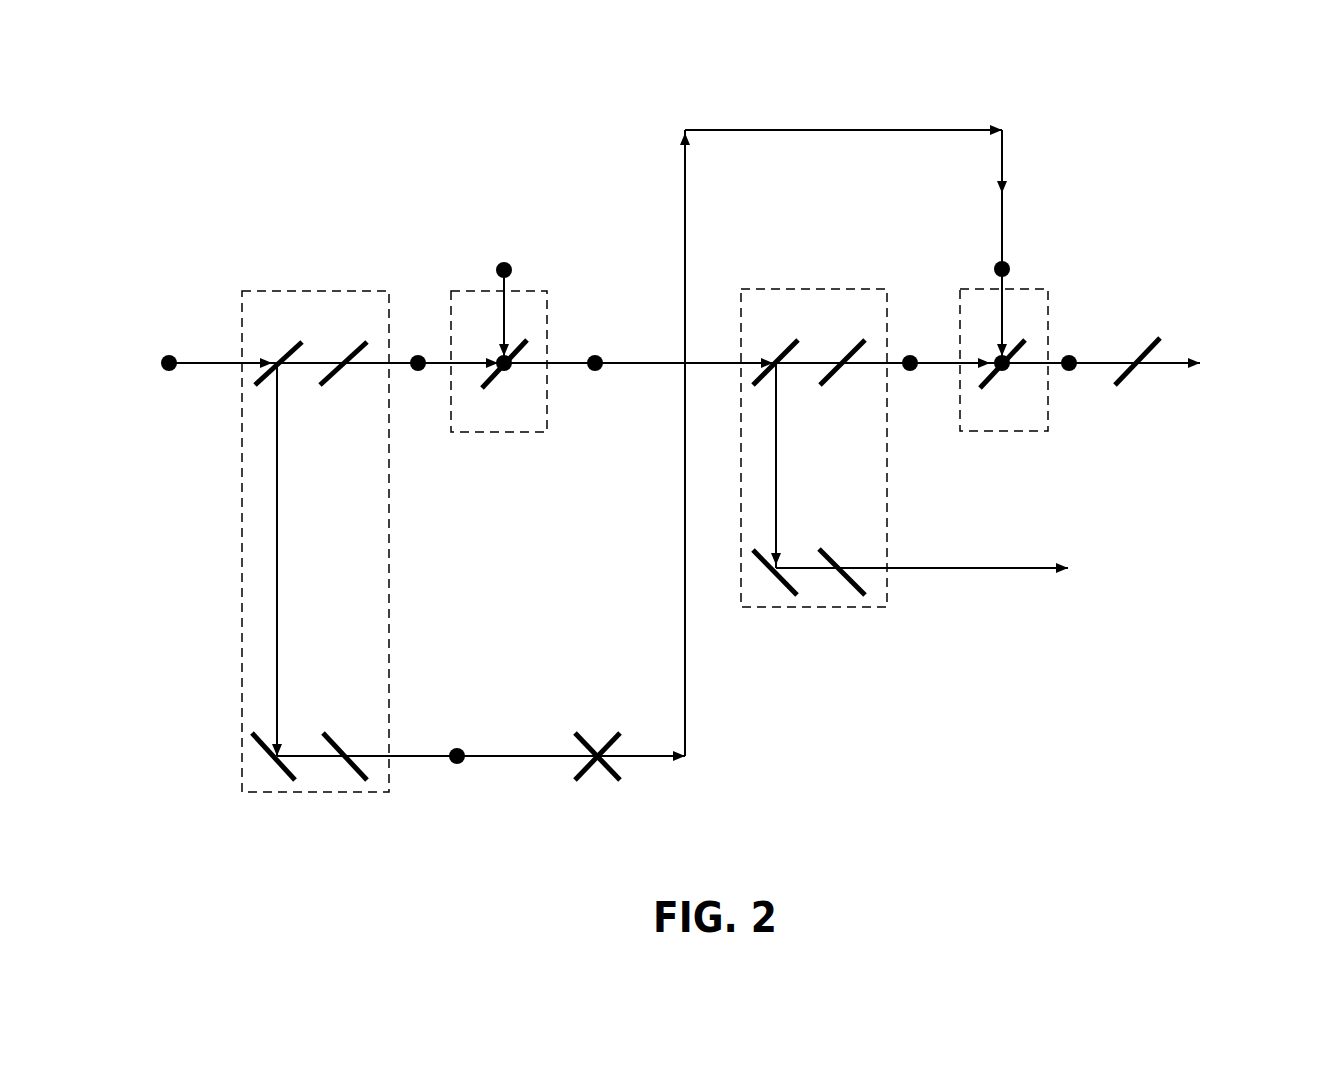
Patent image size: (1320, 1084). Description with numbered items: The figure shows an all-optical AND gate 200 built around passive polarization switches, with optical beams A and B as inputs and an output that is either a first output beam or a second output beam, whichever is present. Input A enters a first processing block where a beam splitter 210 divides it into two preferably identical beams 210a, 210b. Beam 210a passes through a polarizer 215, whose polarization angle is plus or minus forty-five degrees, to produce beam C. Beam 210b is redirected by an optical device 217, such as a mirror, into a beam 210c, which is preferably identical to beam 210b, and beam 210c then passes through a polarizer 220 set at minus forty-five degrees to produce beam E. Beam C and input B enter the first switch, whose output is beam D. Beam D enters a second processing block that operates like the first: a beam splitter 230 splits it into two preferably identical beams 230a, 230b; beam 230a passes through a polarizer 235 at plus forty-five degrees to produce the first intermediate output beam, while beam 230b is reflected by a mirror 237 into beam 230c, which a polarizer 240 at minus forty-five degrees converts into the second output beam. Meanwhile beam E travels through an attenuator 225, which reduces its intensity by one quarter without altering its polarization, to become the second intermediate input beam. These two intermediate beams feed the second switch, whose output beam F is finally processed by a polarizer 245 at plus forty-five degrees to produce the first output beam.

The AND gate 200 is at (1222, 122).
The beam splitter 210 is at (297, 338).
The beam 210a is at (297, 366).
The beam 210b is at (278, 490).
The beam 210c is at (302, 755).
The polarizer 215 is at (363, 338).
The optical device 217 is at (280, 770).
The polarizer 220 is at (340, 770).
The attenuator 225 is at (595, 768).
The beam splitter 230 is at (791, 338).
The beam 230a is at (797, 366).
The beam 230b is at (777, 435).
The beam 230c is at (795, 567).
The polarizer 235 is at (858, 338).
The mirror 237 is at (780, 588).
The polarizer 240 is at (847, 588).
The polarizer 245 is at (1147, 346).